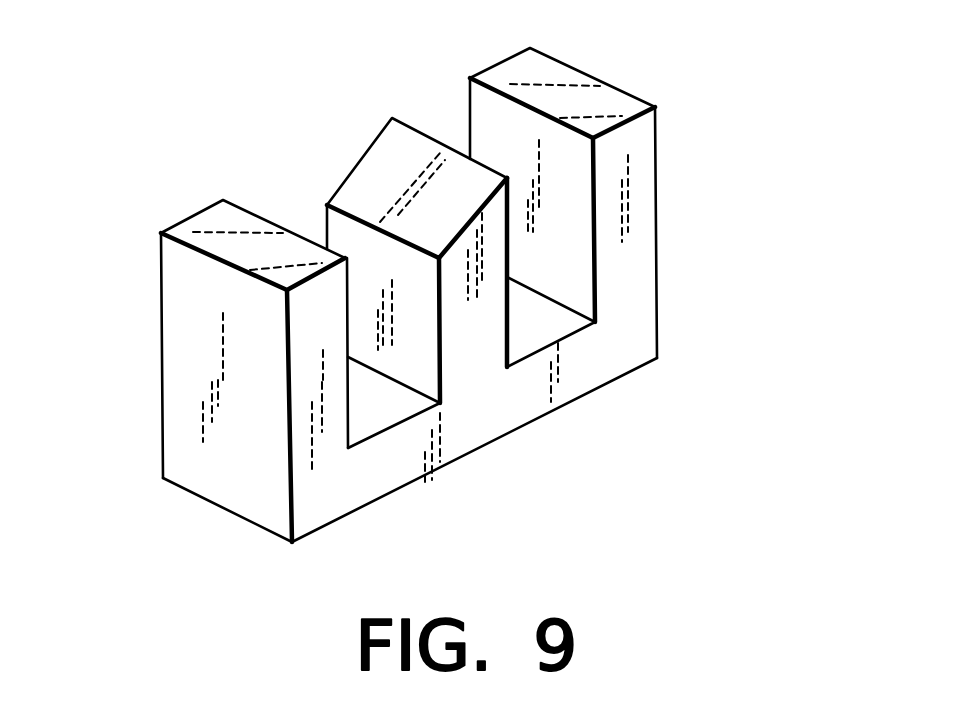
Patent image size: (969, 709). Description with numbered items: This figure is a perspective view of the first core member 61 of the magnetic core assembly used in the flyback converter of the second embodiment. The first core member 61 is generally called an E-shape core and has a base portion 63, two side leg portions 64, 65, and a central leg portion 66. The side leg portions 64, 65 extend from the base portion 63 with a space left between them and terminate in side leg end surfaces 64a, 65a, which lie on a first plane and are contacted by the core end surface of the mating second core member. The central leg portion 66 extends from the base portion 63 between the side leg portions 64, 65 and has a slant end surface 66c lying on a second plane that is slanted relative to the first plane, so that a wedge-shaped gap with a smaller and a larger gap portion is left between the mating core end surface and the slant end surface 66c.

The first core member 61 is at (503, 409).
The base portion 63 is at (537, 397).
The side leg portion 64 is at (190, 365).
The side leg end surface 64a is at (193, 223).
The side leg portion 65 is at (612, 199).
The side leg end surface 65a is at (598, 93).
The central leg portion 66 is at (364, 234).
The slant end surface 66c is at (343, 232).